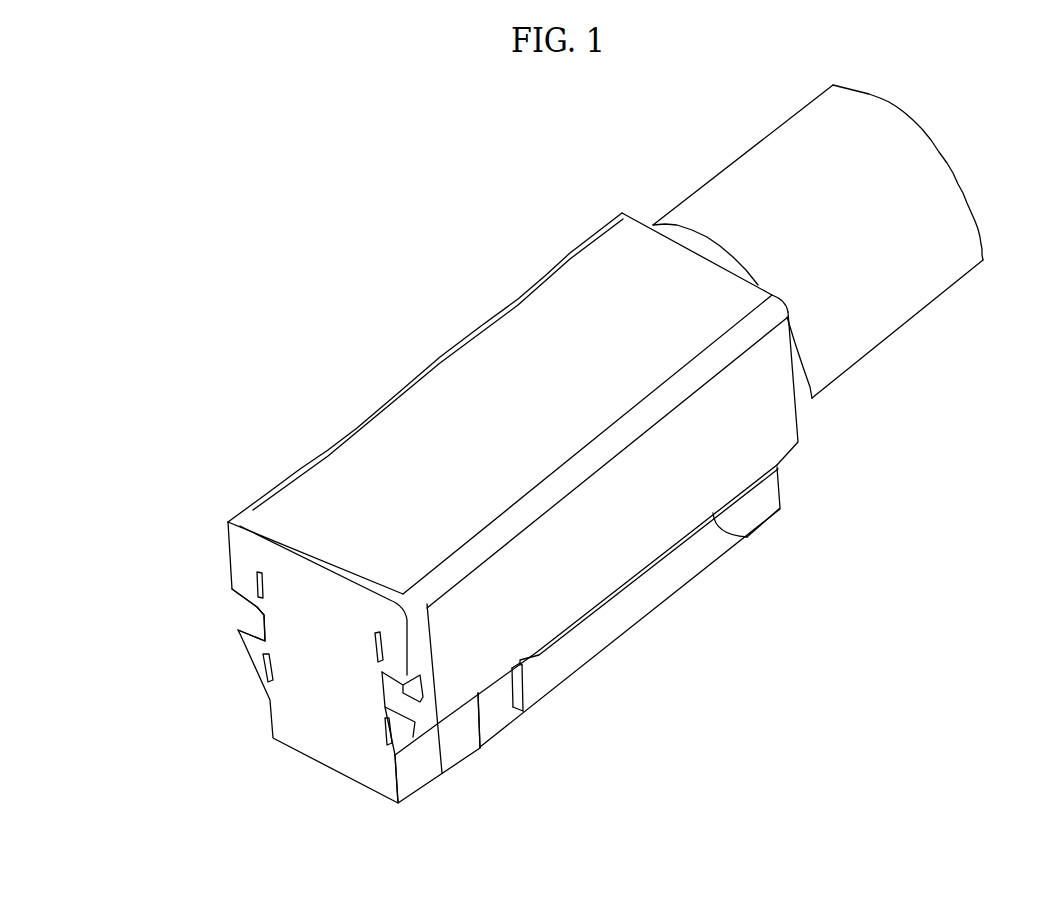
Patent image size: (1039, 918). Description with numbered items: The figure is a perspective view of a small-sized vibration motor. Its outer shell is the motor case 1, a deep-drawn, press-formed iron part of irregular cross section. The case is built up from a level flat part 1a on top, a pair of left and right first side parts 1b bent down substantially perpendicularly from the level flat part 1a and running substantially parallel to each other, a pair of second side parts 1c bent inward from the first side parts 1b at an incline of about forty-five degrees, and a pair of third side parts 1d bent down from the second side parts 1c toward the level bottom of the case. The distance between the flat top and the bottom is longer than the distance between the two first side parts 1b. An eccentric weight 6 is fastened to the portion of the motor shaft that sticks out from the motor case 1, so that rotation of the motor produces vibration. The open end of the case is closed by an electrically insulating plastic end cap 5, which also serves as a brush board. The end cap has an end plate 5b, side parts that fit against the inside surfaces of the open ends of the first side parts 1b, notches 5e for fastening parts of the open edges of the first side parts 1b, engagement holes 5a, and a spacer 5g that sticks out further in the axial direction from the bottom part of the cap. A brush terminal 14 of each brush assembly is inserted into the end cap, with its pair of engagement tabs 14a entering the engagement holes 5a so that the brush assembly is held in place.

The motor case 1 is at (496, 297).
The level flat part 1a is at (603, 268).
The first side part 1b is at (762, 439).
The second side part 1c is at (717, 514).
The third side part 1d is at (653, 599).
The eccentric weight 6 is at (940, 187).
The plastic end cap 5 is at (278, 757).
The engagement hole 5a is at (257, 573).
The end plate 5b is at (327, 748).
The notch 5e is at (252, 628).
The spacer 5g is at (497, 705).
The brush terminal 14 is at (453, 757).
The engagement tab 14a is at (258, 587).